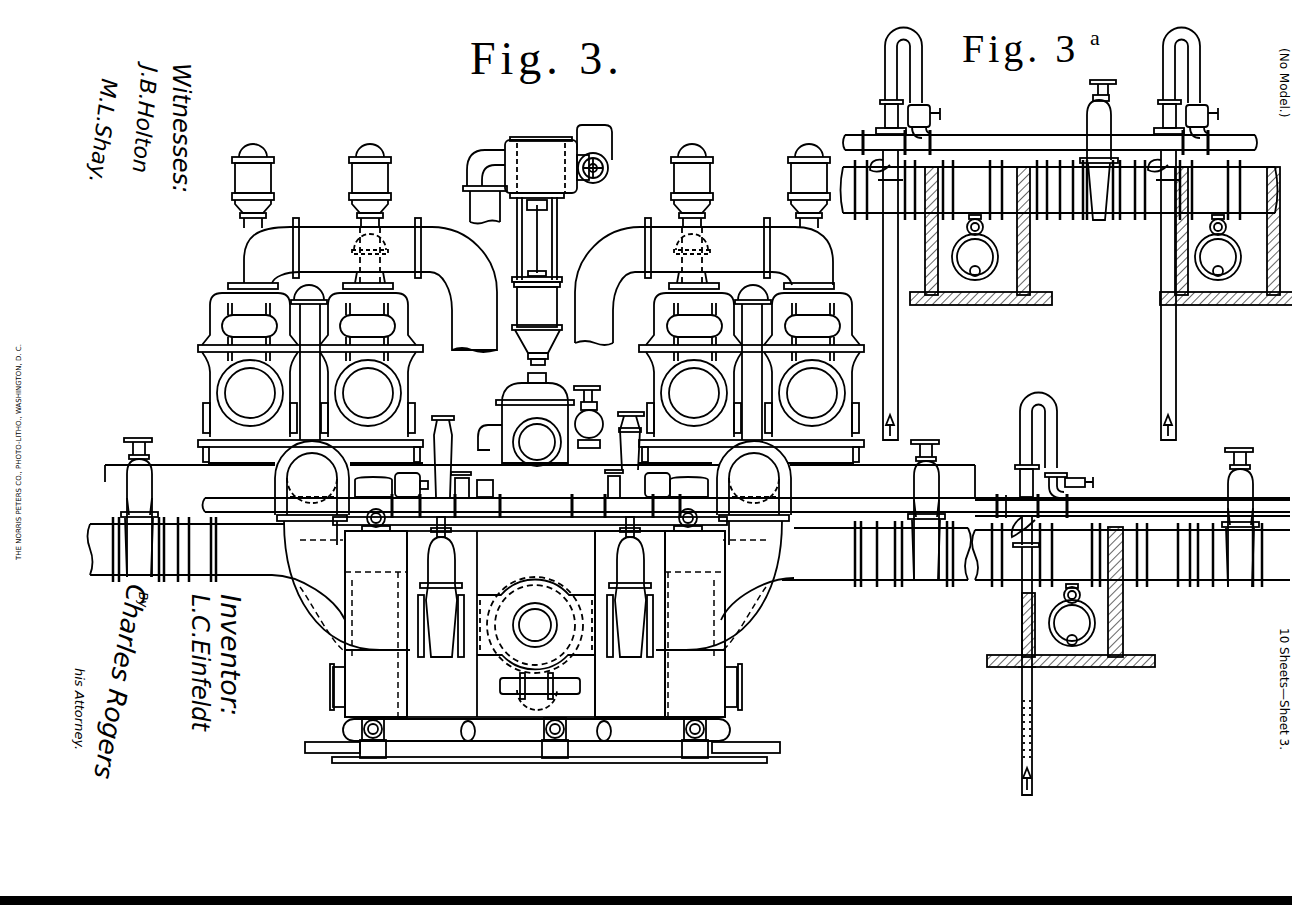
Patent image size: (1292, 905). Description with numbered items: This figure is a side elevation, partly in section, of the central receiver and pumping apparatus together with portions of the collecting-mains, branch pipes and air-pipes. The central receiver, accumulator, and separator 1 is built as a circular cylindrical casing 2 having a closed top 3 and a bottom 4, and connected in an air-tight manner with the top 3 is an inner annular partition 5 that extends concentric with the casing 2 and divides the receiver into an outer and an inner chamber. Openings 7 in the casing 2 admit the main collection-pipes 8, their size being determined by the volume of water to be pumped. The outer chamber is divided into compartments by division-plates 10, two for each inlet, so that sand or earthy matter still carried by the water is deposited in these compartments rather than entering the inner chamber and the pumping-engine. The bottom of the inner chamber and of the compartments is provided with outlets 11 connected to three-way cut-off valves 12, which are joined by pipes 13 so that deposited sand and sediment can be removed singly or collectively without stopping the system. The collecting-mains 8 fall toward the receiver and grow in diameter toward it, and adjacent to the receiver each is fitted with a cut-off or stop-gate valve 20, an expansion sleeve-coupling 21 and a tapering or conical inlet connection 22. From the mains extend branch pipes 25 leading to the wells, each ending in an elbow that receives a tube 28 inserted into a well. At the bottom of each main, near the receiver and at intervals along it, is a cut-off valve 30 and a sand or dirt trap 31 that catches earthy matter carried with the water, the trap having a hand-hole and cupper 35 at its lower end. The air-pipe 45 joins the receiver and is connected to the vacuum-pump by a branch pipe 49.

In FIG. 3, the central receiver, accumulator, and separator 1 is at (344, 655).
In FIG. 3, the circular cylindrical casing 2 is at (726, 655).
In FIG. 3, the closed top 3 is at (530, 517).
In FIG. 3, the bottom 4 is at (648, 717).
In FIG. 3, the inner annular partition 5 is at (666, 683).
In FIG. 3, the openings in the casing 7 is at (533, 505).
In FIG. 3, the main collection-pipes 8 is at (564, 585).
In FIG. 3, the division-plates 10 is at (533, 628).
In FIG. 3, the outlets 11 is at (535, 718).
In FIG. 3, the three-way cut-off valves 12 is at (386, 730).
In FIG. 3, the pipes 13 is at (640, 762).
In FIG. 3, the cut-off or stop-gate valves 20 is at (697, 491).
In FIG. 3, the expansion sleeve-couplings 21 is at (690, 522).
In FIG. 3, the tapering or conical inlet connections 22 is at (689, 552).
In FIG. 3, the branch pipes 25 is at (1010, 525).
In FIG. 3, the tube 28 is at (1012, 671).
In FIG. 3A, the tube 28 is at (1029, 327).
In FIG. 3, the cut-off valve 30 is at (1080, 597).
In FIG. 3A, the cut-off valve 30 is at (983, 231).
In FIG. 3, the sand or dirt trap 31 is at (1072, 623).
In FIG. 3A, the sand or dirt trap 31 is at (1096, 257).
In FIG. 3, the hand-hole and cupper 35 is at (1060, 645).
In FIG. 3A, the hand-hole and cupper 35 is at (970, 280).
In FIG. 3, the air-pipe 45 is at (1132, 497).
In FIG. 3, the branch pipe 49 is at (594, 423).